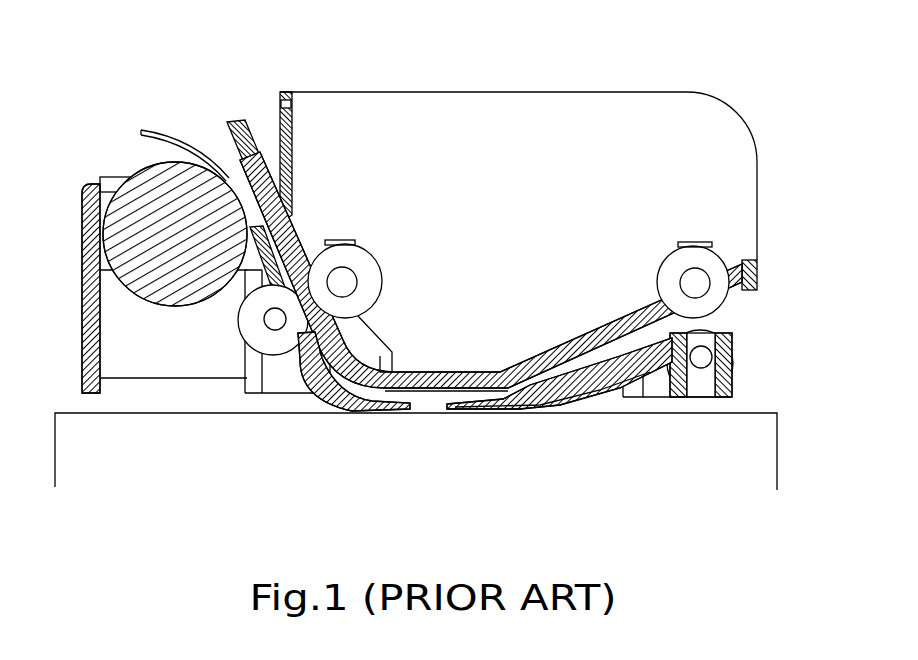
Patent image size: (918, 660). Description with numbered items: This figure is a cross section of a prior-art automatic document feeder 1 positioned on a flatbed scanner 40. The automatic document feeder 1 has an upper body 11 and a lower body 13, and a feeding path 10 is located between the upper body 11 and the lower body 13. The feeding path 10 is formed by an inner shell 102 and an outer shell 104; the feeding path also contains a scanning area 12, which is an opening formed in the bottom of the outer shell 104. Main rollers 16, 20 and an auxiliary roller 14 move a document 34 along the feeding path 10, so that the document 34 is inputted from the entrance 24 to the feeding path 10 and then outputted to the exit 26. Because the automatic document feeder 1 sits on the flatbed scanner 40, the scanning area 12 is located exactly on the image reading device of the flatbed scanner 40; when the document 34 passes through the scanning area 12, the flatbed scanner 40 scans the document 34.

The automatic document feeder 1 is at (431, 80).
The upper body 11 is at (507, 130).
The entrance 24 is at (210, 140).
The document 34 is at (141, 132).
The lower body 13 is at (130, 338).
The auxiliary roller 14 is at (257, 325).
The main roller 16 is at (362, 268).
The main roller 20 is at (672, 264).
The exit 26 is at (738, 317).
The inner shell 102 is at (522, 370).
The feeding path 10 is at (355, 410).
The scanning area 12 is at (432, 412).
The outer shell 104 is at (550, 413).
The flatbed scanner 40 is at (779, 445).